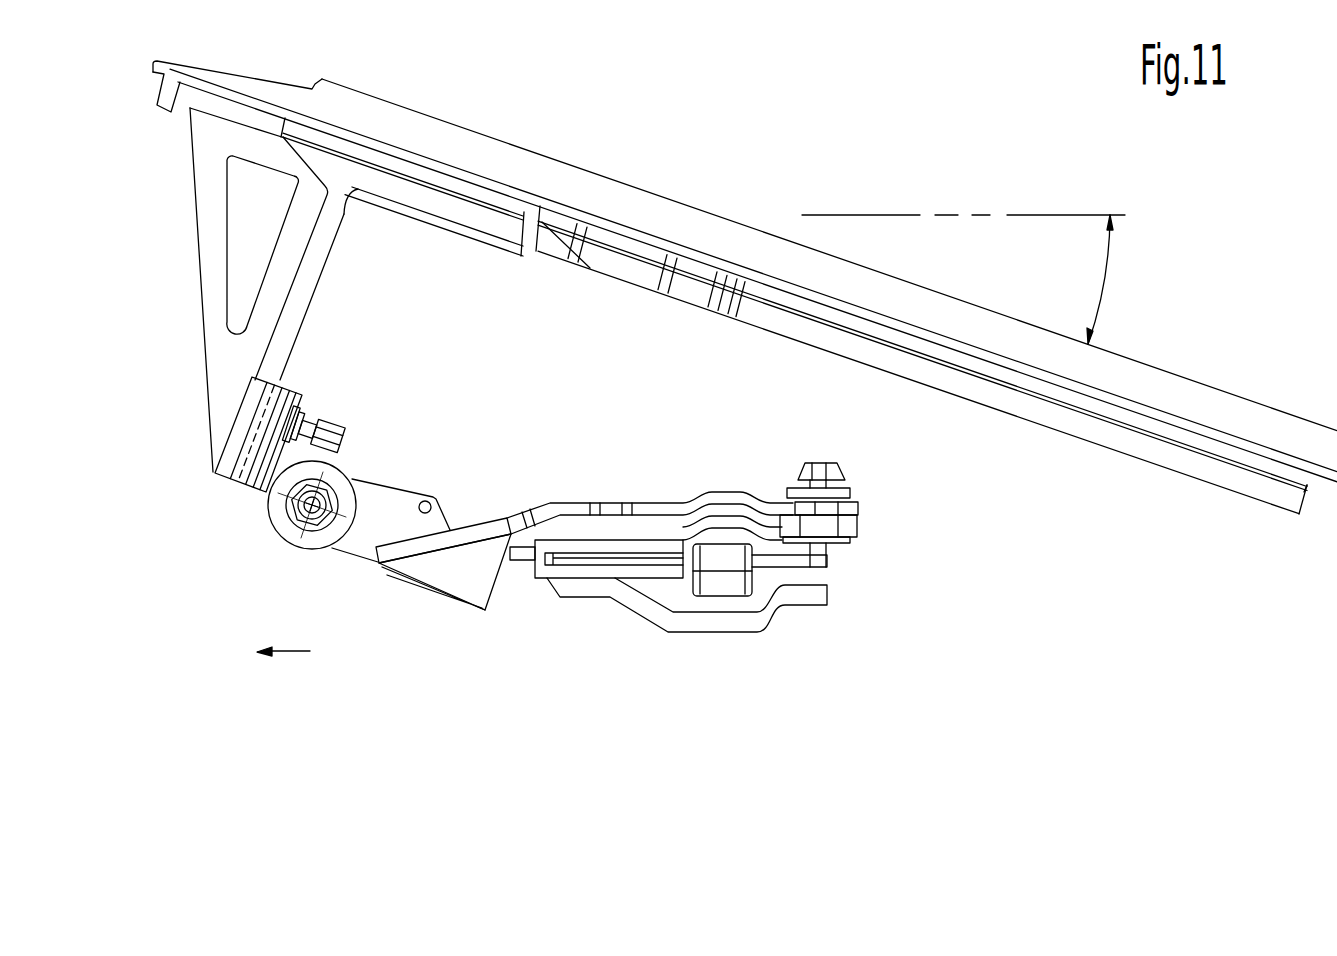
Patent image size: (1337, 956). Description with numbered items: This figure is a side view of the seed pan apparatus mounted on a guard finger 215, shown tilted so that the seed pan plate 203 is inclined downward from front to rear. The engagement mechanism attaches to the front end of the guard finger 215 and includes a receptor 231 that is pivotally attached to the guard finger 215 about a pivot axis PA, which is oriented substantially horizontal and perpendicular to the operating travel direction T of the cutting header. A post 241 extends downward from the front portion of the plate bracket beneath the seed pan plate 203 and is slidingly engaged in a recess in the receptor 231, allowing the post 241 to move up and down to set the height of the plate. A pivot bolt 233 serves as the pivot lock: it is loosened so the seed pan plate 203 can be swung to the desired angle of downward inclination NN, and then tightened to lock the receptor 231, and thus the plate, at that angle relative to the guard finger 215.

The seed pan plate 203 is at (527, 150).
The post 241 is at (355, 200).
The receptor 231 is at (300, 392).
The pivot bolt 233 is at (357, 483).
The guard finger 215 is at (745, 635).
The pivot axis PA is at (292, 537).
The angle of downward inclination NN is at (1105, 281).
The operating travel direction T is at (292, 654).